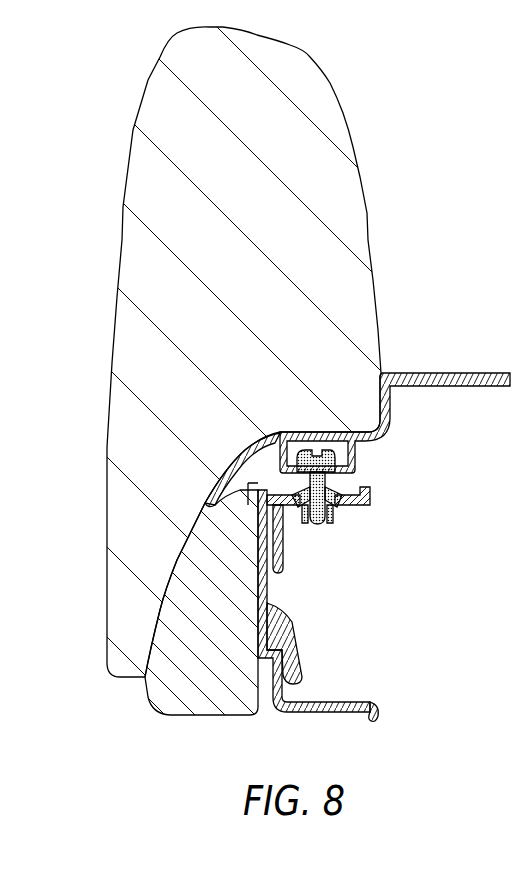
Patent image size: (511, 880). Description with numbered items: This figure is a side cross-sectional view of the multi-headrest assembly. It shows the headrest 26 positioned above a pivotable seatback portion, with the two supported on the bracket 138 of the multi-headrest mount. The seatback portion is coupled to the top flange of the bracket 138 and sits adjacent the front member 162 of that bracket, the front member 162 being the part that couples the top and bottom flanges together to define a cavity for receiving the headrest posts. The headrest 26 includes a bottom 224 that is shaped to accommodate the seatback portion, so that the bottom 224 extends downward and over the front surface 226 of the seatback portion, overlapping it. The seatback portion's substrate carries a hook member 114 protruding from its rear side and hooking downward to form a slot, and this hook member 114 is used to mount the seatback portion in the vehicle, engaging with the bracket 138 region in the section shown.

The headrest 26 is at (367, 201).
The front surface 226 is at (163, 564).
The bottom 224 is at (323, 508).
The front member 162 is at (283, 552).
The hook member 114 is at (298, 643).
The bracket 138 is at (374, 705).